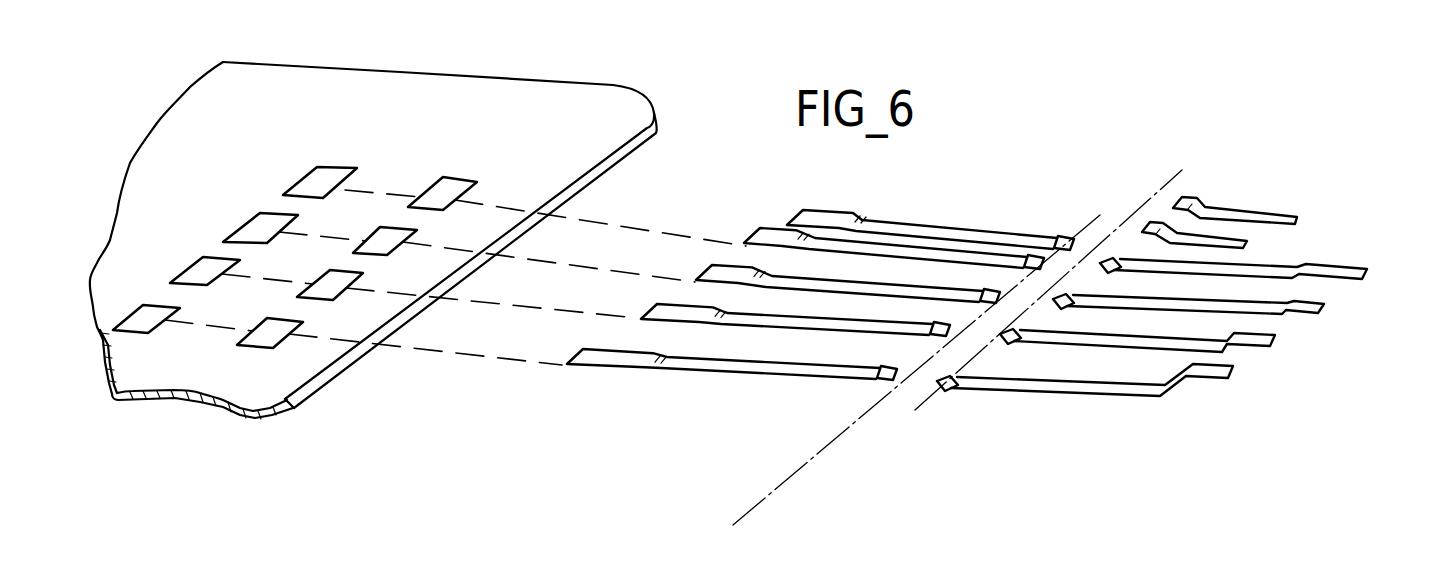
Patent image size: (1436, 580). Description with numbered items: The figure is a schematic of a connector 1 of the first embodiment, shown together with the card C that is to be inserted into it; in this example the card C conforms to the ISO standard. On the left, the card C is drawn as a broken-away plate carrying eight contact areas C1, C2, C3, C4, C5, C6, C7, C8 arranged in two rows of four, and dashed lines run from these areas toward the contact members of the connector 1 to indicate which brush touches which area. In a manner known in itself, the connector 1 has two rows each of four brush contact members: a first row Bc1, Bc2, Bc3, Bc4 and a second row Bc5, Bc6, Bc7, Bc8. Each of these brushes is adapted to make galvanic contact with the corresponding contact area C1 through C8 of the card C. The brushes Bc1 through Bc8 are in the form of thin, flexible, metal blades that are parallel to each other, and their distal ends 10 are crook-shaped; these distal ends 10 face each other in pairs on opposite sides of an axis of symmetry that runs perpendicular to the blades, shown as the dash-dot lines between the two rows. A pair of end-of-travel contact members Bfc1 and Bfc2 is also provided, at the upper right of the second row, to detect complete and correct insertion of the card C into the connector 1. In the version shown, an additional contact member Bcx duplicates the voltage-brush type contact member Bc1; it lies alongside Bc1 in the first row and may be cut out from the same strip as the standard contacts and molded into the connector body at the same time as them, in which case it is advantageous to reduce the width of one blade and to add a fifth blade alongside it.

The card C is at (281, 371).
The contact area of the card C1 is at (304, 176).
The contact area of the card C2 is at (242, 222).
The contact area of the card C3 is at (189, 265).
The contact area of the card C4 is at (133, 307).
The contact area of the card C5 is at (457, 177).
The contact area of the card C6 is at (417, 231).
The contact area of the card C7 is at (363, 274).
The contact area of the card C8 is at (303, 323).
The additional contact member Bcx is at (828, 211).
The brush contact member Bc1 is at (770, 231).
The brush contact member Bc2 is at (717, 268).
The brush contact member Bc3 is at (667, 306).
The brush contact member Bc4 is at (595, 350).
The brush contact member Bc5 is at (1370, 273).
The brush contact member Bc6 is at (1323, 310).
The brush contact member Bc7 is at (1275, 340).
The brush contact member Bc8 is at (1230, 373).
The end of travel contact member Bfc1 is at (1247, 242).
The end of travel contact member Bfc2 is at (1300, 217).
The distal end of the brush blade 10 is at (1066, 237).
The connector 1 is at (1188, 327).